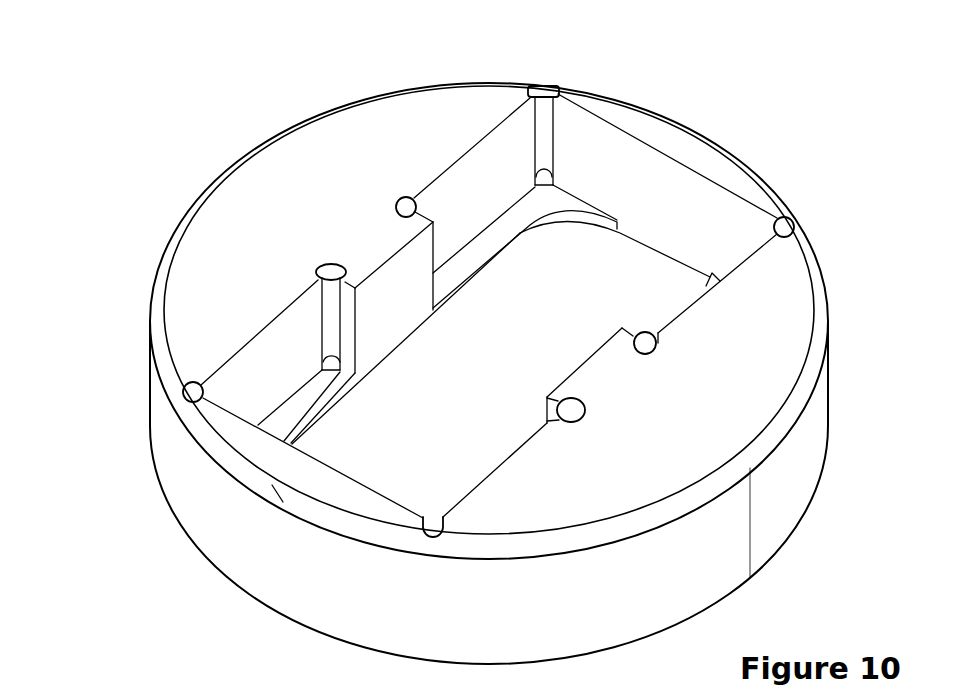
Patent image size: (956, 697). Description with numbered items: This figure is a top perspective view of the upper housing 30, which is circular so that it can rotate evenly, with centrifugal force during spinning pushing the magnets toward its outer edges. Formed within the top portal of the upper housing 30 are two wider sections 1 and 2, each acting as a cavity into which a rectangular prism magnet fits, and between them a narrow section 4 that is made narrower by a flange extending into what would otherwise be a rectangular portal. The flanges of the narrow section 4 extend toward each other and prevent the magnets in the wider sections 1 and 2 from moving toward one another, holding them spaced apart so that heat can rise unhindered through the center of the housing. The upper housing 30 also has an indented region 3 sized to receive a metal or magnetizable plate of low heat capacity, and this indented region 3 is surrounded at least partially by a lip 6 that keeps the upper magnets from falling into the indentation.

The wider section 1 is at (270, 365).
The wider section 2 is at (468, 197).
The indented region 3 is at (568, 248).
The narrow section 4 is at (390, 280).
The lip 6 is at (525, 212).
The upper housing 30 is at (180, 462).